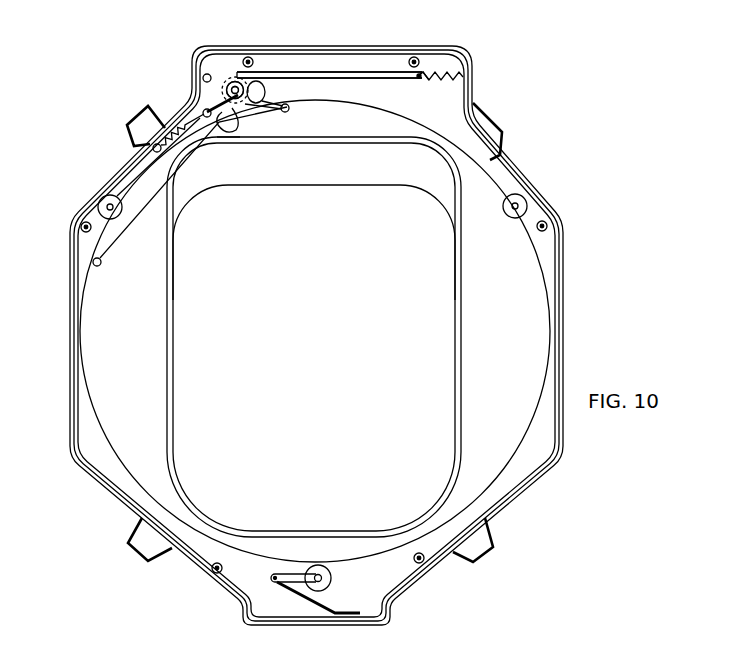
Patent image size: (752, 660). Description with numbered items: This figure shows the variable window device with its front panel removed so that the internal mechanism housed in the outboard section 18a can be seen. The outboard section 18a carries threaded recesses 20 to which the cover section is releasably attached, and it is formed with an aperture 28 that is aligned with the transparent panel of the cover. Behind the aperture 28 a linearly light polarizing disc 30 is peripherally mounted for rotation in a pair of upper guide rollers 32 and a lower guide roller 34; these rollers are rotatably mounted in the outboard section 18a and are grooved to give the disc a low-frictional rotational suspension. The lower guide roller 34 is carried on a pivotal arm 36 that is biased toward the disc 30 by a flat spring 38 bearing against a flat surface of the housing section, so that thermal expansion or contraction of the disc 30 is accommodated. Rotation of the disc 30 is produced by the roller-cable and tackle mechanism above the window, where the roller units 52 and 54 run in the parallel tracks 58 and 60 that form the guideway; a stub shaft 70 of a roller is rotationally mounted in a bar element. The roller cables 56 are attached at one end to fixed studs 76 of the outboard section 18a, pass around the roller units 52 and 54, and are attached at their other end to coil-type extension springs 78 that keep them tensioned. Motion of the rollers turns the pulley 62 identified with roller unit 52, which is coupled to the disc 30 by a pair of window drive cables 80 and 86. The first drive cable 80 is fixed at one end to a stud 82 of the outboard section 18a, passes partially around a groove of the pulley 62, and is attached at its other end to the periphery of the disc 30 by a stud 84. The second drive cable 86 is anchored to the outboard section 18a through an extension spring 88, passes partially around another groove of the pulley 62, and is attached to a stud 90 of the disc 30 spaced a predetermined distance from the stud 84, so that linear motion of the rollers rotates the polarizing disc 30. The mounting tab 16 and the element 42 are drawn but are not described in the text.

The mounting tab 16 is at (124, 534).
The outboard section 18a is at (507, 478).
The threaded recesses 20 is at (83, 230).
The aperture 28 is at (453, 336).
The linearly light polarizing disc 30 is at (537, 258).
The upper guide rollers 32 is at (102, 199).
The lower guide roller 34 is at (322, 566).
The pivotal arm 36 is at (285, 590).
The flat spring 38 is at (324, 606).
The pane 42 is at (345, 187).
The roller unit 52 is at (233, 76).
The pulley 62 is at (235, 90).
The roller unit 54 is at (289, 108).
The roller cables 56 is at (312, 72).
The parallel track 58 is at (358, 72).
The parallel track 60 is at (226, 139).
The stub shaft 70 is at (240, 108).
The fixed studs 76 is at (420, 74).
The coil-type extension springs 78 is at (143, 150).
The first window drive cable 80 is at (200, 53).
The fixed stud 82 is at (203, 76).
The stud 84 is at (98, 266).
The second window drive cable 86 is at (382, 79).
The extension spring 88 is at (425, 80).
The stud 90 is at (287, 111).